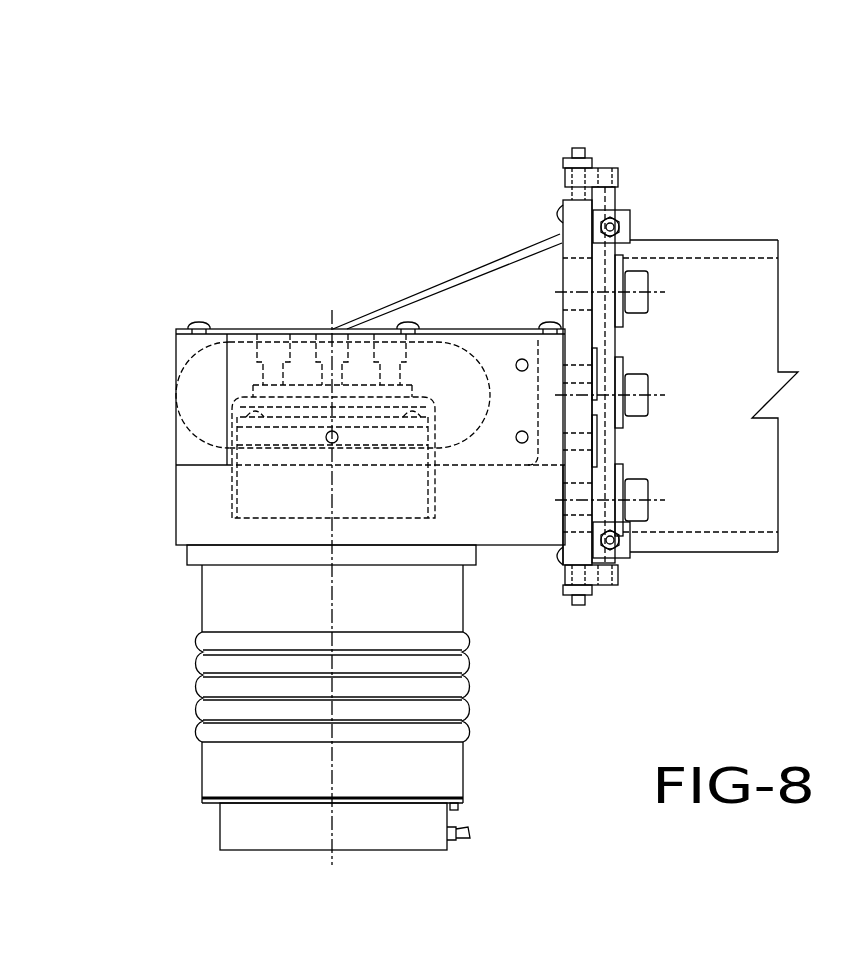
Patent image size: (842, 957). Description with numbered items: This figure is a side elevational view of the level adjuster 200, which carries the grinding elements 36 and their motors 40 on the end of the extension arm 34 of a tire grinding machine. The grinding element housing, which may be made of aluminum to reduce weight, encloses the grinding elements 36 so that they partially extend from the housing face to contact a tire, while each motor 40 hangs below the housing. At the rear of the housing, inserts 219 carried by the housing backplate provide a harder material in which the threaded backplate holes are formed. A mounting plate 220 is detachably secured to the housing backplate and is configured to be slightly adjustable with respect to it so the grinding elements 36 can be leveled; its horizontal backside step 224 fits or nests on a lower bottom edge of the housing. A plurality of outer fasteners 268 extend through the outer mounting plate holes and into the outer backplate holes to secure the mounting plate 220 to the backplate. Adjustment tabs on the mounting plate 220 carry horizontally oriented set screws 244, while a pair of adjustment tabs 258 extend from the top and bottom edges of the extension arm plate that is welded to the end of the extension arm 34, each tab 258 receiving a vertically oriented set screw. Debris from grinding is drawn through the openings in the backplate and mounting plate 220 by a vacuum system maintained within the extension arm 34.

The extension arm 34 is at (738, 240).
The grinding element 36 is at (207, 405).
The motor 40 is at (437, 770).
The level adjuster 200 is at (628, 354).
The insert 219 is at (540, 358).
The mounting plate 220 is at (553, 188).
The horizontal backside step 224 is at (565, 548).
The set screw 244 is at (618, 218).
The adjustment tab 258 is at (615, 167).
The outer fastener 268 is at (651, 283).